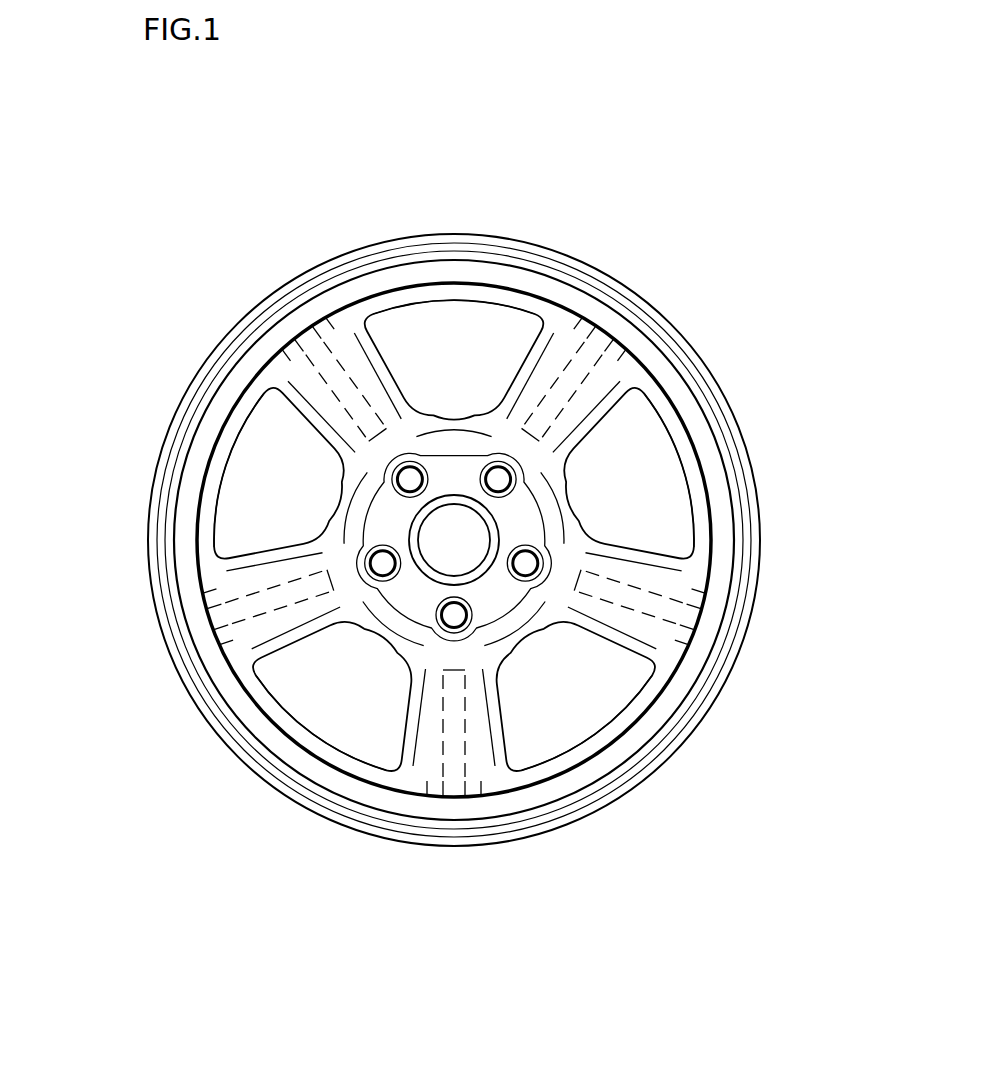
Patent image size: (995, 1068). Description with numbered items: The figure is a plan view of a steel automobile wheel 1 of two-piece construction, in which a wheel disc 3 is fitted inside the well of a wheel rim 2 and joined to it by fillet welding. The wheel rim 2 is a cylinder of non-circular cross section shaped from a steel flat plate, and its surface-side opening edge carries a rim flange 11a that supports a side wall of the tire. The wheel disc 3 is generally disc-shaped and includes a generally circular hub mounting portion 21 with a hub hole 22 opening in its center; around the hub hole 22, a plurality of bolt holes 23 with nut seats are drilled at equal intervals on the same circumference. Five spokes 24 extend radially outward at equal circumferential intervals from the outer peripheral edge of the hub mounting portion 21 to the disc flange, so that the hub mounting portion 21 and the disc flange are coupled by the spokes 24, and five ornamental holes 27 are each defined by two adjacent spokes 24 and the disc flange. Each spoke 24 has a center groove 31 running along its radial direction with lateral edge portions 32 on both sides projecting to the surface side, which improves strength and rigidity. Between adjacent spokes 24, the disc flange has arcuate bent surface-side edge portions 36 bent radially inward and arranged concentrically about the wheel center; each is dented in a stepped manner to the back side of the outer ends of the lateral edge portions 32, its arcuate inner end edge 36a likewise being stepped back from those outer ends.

The automobile wheel 1 is at (648, 218).
The wheel rim 2 is at (737, 411).
The wheel disc 3 is at (385, 303).
The rim flange 11a is at (748, 448).
The hub mounting portion 21 is at (415, 603).
The hub hole 22 is at (478, 550).
The bolt holes 23 is at (408, 477).
The spokes 24 is at (340, 335).
The ornamental holes 27 is at (478, 325).
The center groove 31 is at (305, 328).
The lateral edge portions 32 is at (273, 398).
The bent surface-side edge portions 36 is at (447, 293).
The arcuate inner end edge 36a is at (468, 302).